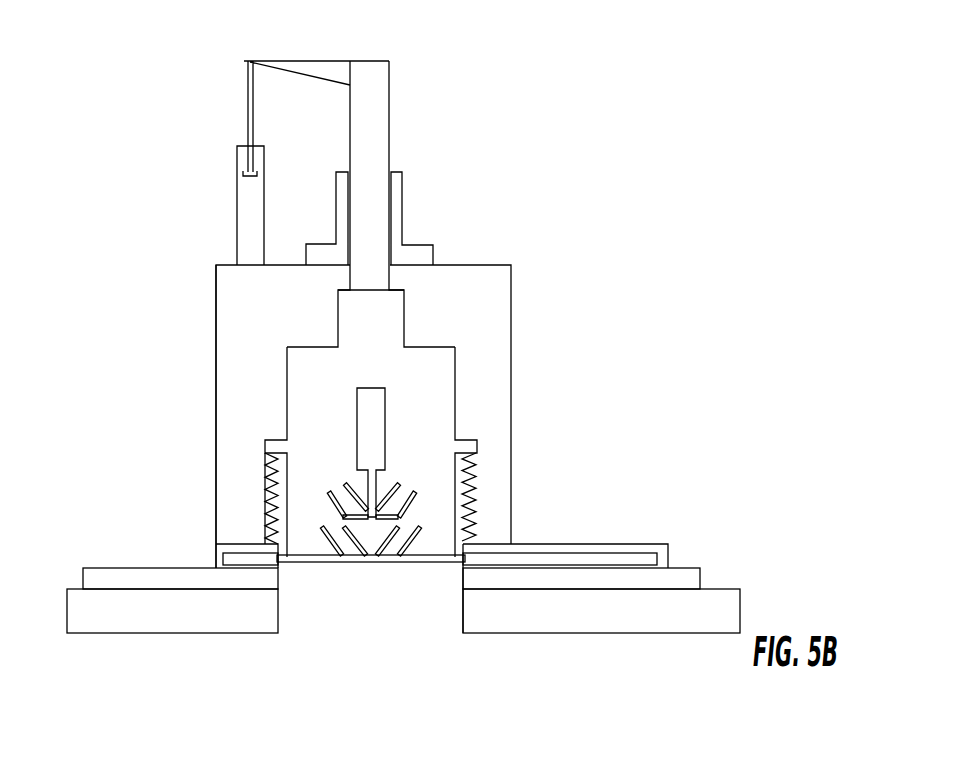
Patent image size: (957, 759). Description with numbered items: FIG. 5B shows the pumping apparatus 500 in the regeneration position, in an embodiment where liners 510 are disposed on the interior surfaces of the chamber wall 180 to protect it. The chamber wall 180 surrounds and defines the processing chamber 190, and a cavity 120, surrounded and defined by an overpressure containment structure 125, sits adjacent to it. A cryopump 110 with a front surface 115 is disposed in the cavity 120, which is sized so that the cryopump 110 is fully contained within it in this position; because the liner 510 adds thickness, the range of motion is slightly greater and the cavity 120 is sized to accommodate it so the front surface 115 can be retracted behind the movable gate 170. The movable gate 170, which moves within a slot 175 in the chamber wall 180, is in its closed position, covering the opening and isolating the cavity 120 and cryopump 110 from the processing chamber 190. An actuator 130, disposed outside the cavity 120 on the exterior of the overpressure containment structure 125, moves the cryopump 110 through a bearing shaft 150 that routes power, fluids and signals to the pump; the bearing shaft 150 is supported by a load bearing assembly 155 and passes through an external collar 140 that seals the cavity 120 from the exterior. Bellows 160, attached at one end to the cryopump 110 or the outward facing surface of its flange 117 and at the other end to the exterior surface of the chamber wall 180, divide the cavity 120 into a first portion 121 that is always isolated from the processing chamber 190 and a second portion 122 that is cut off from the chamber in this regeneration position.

The pumping apparatus 500 is at (191, 303).
The liner 510 is at (601, 633).
The processing chamber 190 is at (395, 662).
The chamber wall 180 is at (684, 568).
The slot 175 is at (538, 547).
The movable gate 170 is at (393, 562).
The front surface 115 is at (320, 562).
The cryopump 110 is at (284, 417).
The flange 117 is at (265, 446).
The second portion 122 is at (463, 537).
The first portion 121 is at (485, 392).
The cavity 120 is at (477, 310).
The overpressure containment structure 125 is at (514, 330).
The actuator 130 is at (237, 203).
The external collar 140 is at (403, 213).
The bearing shaft 150 is at (347, 270).
The load bearing assembly 155 is at (320, 61).
The bellows 160 is at (260, 530).